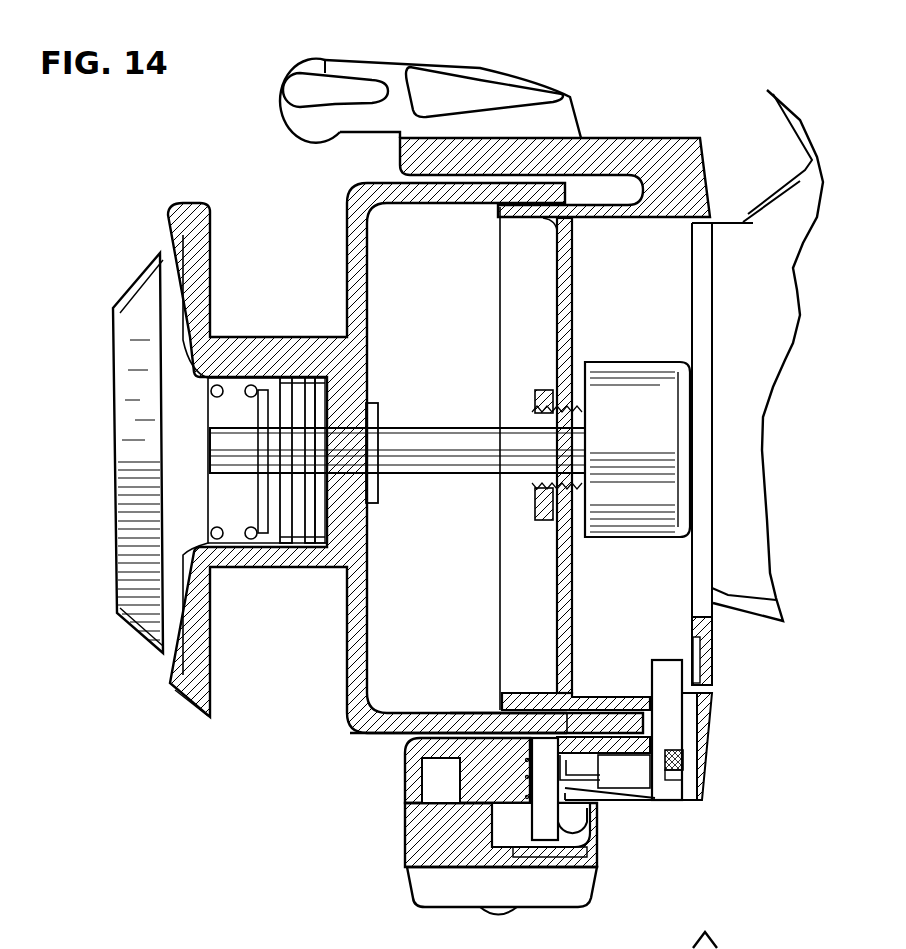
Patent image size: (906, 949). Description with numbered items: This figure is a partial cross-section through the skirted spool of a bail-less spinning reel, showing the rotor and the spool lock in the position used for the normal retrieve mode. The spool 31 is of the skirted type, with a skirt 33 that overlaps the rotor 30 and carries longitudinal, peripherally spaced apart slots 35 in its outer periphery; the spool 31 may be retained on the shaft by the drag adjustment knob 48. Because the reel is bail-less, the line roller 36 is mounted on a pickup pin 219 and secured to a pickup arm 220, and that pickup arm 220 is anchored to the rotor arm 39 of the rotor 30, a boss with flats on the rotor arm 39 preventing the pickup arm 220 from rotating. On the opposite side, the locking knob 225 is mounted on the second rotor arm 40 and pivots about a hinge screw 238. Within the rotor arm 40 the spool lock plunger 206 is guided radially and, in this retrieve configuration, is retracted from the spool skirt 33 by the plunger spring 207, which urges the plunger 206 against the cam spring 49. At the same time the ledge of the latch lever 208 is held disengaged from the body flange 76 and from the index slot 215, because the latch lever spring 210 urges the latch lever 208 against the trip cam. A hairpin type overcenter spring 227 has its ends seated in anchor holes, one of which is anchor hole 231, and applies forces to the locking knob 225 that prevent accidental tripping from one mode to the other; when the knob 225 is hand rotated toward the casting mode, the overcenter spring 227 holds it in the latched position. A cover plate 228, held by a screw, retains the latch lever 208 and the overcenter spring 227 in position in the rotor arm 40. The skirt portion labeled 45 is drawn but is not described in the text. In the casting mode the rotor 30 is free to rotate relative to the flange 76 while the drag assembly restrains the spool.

The pickup pin 219 is at (359, 88).
The line roller 36 is at (270, 78).
The pickup arm 220 is at (565, 118).
The rotor arm 39 is at (400, 160).
The rotor 30 is at (568, 296).
The drag adjustment knob 48 is at (128, 498).
The spool 31 is at (348, 622).
The skirt 33 is at (380, 714).
The slots 35 is at (438, 716).
The skirt 45 is at (203, 720).
The rotor arm 40 is at (410, 775).
The plunger spring 207 is at (572, 760).
The anchor hole 231 is at (605, 772).
The flange 76 is at (702, 573).
The index slot 215 is at (690, 640).
The latch lever 208 is at (673, 711).
The latch lever spring 210 is at (690, 765).
The overcenter spring 227 is at (650, 800).
The cover plate 228 is at (648, 800).
The lock plunger 206 is at (545, 830).
The cam spring 49 is at (580, 854).
The locking knob 225 is at (578, 889).
The hinge screw 238 is at (497, 912).